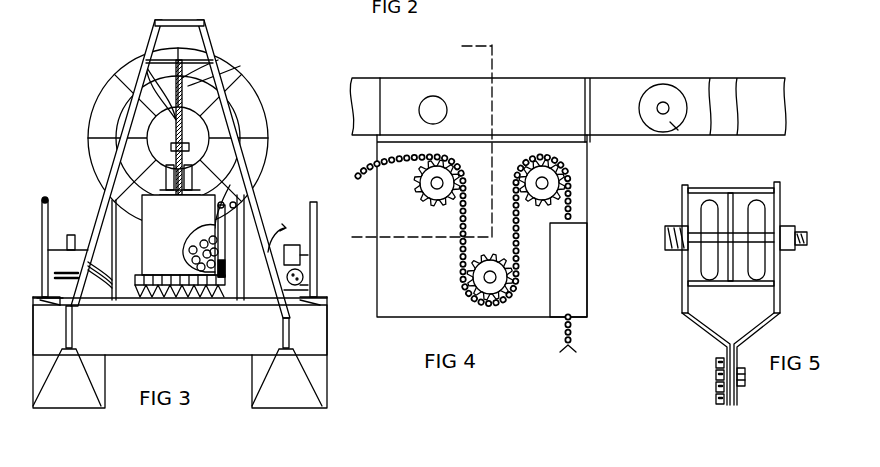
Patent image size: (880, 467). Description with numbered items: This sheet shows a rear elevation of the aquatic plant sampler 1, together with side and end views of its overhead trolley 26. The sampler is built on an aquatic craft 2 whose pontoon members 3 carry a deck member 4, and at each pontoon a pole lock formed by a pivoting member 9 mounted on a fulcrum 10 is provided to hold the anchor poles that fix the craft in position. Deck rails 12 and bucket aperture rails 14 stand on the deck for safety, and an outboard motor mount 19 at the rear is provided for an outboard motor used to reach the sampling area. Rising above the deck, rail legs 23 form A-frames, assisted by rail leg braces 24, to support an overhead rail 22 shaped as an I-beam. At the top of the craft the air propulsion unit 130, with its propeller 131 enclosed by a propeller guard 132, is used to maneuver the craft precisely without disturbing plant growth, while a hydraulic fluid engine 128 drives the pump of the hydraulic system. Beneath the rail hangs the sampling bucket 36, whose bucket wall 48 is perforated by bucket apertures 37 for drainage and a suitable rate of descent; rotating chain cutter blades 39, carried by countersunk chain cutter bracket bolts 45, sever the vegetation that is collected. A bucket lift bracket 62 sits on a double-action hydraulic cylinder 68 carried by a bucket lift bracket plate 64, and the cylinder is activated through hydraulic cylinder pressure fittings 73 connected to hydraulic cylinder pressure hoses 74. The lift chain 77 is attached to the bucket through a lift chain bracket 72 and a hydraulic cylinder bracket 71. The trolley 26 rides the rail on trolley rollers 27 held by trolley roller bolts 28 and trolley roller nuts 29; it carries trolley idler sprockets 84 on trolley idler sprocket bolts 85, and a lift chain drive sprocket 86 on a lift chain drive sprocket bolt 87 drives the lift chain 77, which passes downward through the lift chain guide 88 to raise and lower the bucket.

In FIG. 3, the aquatic plant sampler 1 is at (66, 132).
In FIG. 3, the aquatic craft 2 is at (344, 300).
In FIG. 3, the pontoon members 3 is at (42, 340).
In FIG. 3, the deck member 4 is at (227, 243).
In FIG. 4, the deck member 4 is at (415, 138).
In FIG. 3, the pivoting member 9 is at (48, 302).
In FIG. 3, the fulcrum 10 is at (52, 314).
In FIG. 3, the deck rails 12 is at (44, 212).
In FIG. 3, the bucket aperture rails 14 is at (114, 262).
In FIG. 3, the outboard motor mount 19 is at (157, 334).
In FIG. 4, the overhead rail 22 is at (365, 92).
In FIG. 5, the overhead rail 22 is at (728, 200).
In FIG. 3, the rail legs 23 is at (153, 47).
In FIG. 3, the rail leg braces 24 is at (110, 222).
In FIG. 4, the trolley 26 is at (537, 107).
In FIG. 5, the trolley 26 is at (780, 296).
In FIG. 4, the trolley rollers 27 is at (672, 127).
In FIG. 5, the trolley rollers 27 is at (708, 214).
In FIG. 4, the trolley roller bolts 28 is at (447, 113).
In FIG. 5, the trolley roller bolts 28 is at (668, 242).
In FIG. 5, the trolley roller nuts 29 is at (786, 228).
In FIG. 3, the sampling bucket 36 is at (138, 253).
In FIG. 3, the bucket apertures 37 is at (183, 296).
In FIG. 3, the chain cutter blades 39 is at (128, 285).
In FIG. 3, the chain cutter bracket bolts 45 is at (178, 247).
In FIG. 3, the bucket wall 48 is at (154, 220).
In FIG. 3, the bucket lift bracket 62 is at (150, 170).
In FIG. 3, the bucket lift bracket plate 64 is at (180, 199).
In FIG. 3, the hydraulic cylinder 68 is at (169, 138).
In FIG. 3, the hydraulic cylinder bracket 71 is at (187, 136).
In FIG. 3, the lift chain bracket 72 is at (169, 127).
In FIG. 3, the hydraulic cylinder pressure fittings 73 is at (189, 147).
In FIG. 3, the hydraulic cylinder pressure hoses 74 is at (178, 138).
In FIG. 3, the lift chain 77 is at (215, 62).
In FIG. 4, the lift chain 77 is at (372, 158).
In FIG. 4, the trolley idler sprockets 84 is at (426, 192).
In FIG. 5, the trolley idler sprockets 84 is at (716, 360).
In FIG. 4, the trolley idler sprocket bolts 85 is at (466, 184).
In FIG. 5, the trolley idler sprocket bolts 85 is at (750, 372).
In FIG. 4, the lift chain drive sprocket 86 is at (495, 226).
In FIG. 4, the lift chain drive sprocket bolt 87 is at (551, 179).
In FIG. 4, the lift chain guide 88 is at (568, 270).
In FIG. 3, the hydraulic fluid engine 128 is at (302, 260).
In FIG. 3, the air propulsion unit 130 is at (206, 138).
In FIG. 3, the propeller 131 is at (160, 21).
In FIG. 3, the propeller guard 132 is at (258, 75).